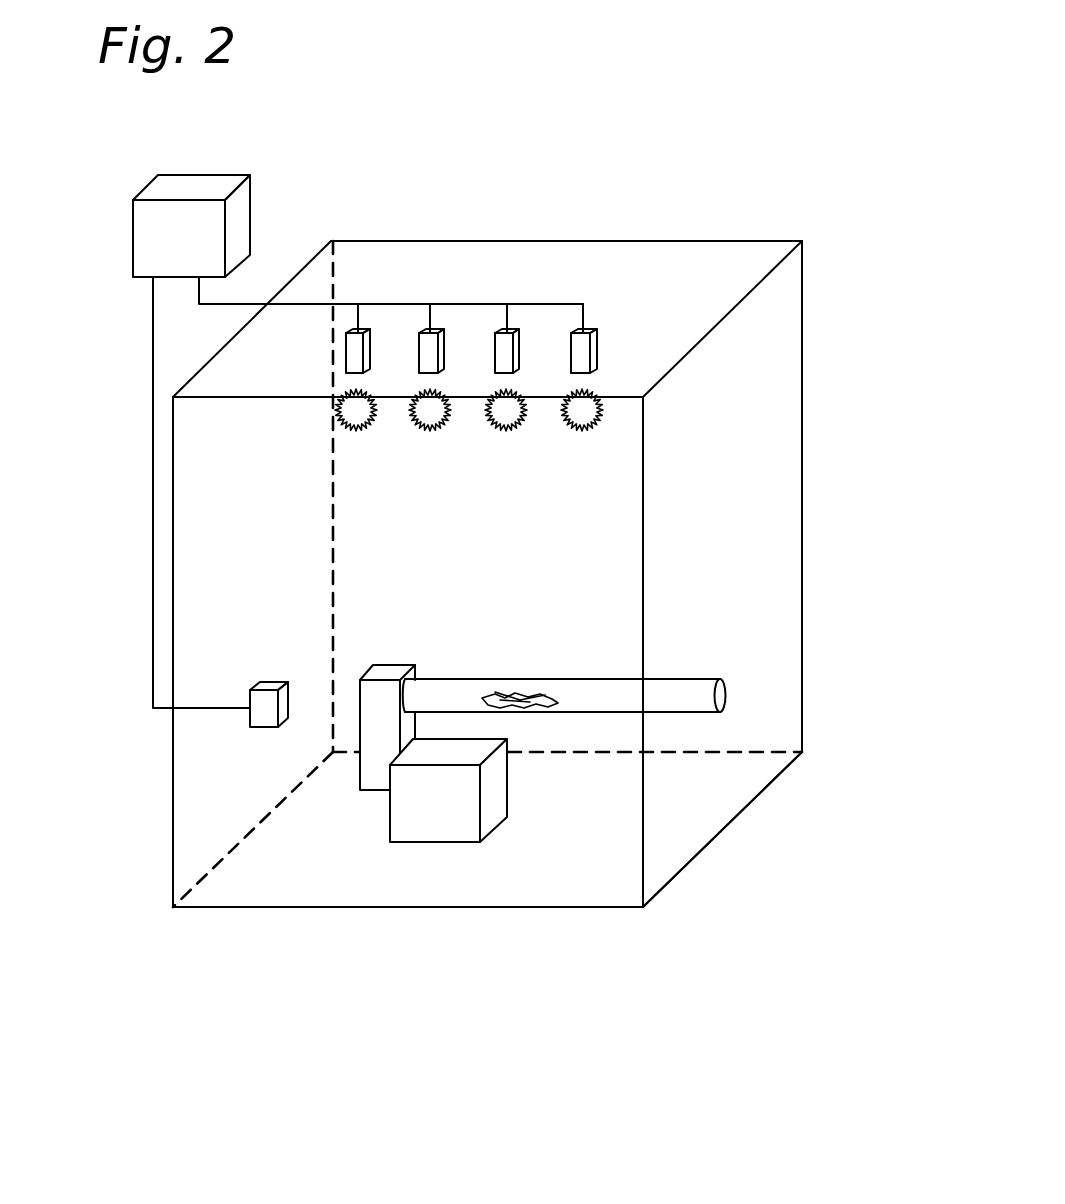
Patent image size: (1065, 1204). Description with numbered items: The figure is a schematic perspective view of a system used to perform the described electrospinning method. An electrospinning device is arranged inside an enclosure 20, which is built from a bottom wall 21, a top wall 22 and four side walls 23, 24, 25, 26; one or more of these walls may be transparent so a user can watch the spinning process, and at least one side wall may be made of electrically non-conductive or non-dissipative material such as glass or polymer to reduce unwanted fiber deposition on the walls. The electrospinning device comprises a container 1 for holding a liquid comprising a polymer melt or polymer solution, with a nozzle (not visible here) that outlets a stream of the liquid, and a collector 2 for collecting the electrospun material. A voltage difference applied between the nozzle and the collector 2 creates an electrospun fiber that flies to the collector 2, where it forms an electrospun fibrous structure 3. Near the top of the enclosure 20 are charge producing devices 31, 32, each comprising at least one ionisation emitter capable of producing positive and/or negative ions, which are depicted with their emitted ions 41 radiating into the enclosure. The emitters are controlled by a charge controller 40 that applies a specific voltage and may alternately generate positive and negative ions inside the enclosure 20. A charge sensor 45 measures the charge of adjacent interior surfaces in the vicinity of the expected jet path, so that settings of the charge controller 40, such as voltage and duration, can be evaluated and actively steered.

The container 1 is at (543, 725).
The collector 2 is at (590, 688).
The electro spun fibrous structure 3 is at (512, 700).
The enclosure 20 is at (790, 200).
The bottom wall 21 is at (688, 832).
The top wall 22 is at (672, 263).
The side wall 23 is at (323, 867).
The side wall 24 is at (205, 508).
The side wall 25 is at (762, 445).
The side wall 26 is at (755, 608).
The charge producing device 31 is at (362, 333).
The charge producing device 32 is at (433, 333).
The charge controller 40 is at (195, 190).
The emitted light 41 is at (430, 432).
The charge sensor 45 is at (265, 690).